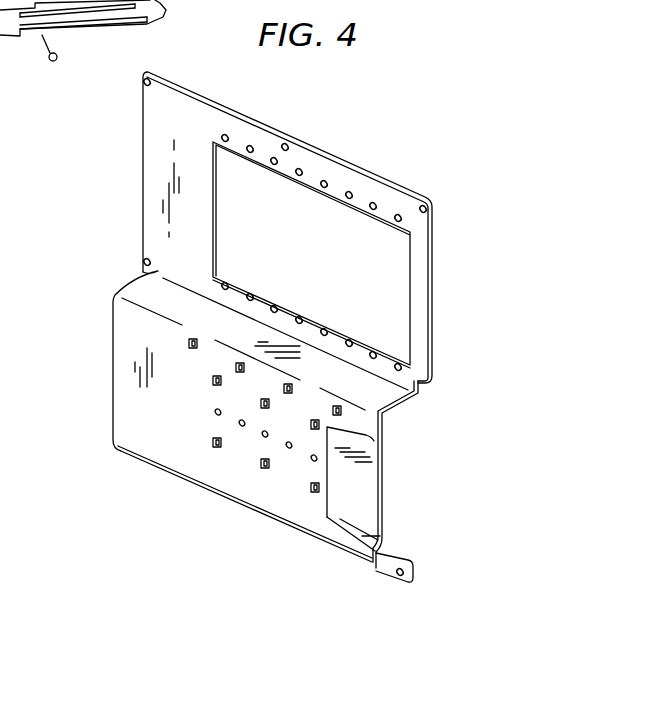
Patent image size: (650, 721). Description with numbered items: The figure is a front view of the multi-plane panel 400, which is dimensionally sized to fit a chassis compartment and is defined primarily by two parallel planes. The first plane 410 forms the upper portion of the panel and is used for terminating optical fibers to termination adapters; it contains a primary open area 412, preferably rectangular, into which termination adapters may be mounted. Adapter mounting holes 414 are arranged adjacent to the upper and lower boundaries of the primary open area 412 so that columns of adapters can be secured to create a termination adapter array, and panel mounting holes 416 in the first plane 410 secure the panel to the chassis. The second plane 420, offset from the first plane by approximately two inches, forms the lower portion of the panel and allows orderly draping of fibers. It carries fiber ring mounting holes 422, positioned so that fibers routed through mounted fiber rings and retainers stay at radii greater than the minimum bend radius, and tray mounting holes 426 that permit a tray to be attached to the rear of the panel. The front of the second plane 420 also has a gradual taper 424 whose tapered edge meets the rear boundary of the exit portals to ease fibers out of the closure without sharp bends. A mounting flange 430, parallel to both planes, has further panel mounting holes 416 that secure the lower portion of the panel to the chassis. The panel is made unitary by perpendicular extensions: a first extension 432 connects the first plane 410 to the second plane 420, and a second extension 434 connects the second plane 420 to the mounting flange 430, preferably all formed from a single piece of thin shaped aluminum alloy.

The panel 400 is at (365, 90).
The first plane 410 is at (181, 128).
The primary open area 412 is at (395, 281).
The adapter mounting holes 414 is at (347, 192).
The panel mounting holes 416 is at (141, 82).
The second plane 420 is at (128, 376).
The fiber ring mounting holes 422 is at (190, 347).
The gradual taper 424 is at (365, 486).
The tray mounting holes 426 is at (265, 437).
The mounting flange 430 is at (402, 553).
The first extension 432 is at (384, 398).
The second extension 434 is at (383, 553).